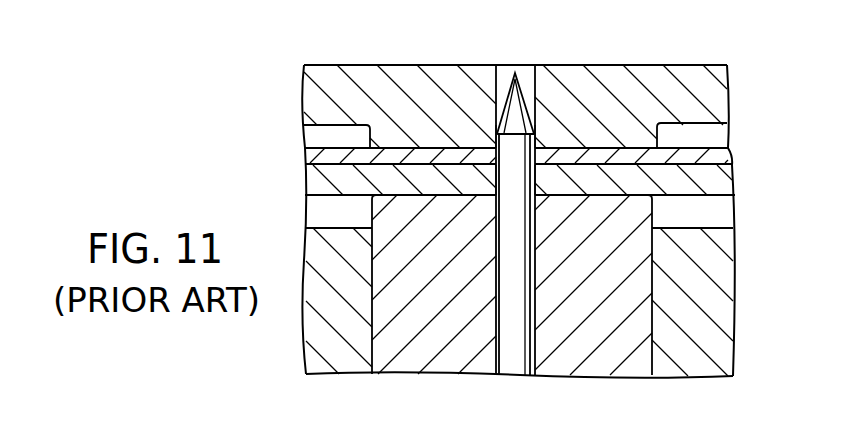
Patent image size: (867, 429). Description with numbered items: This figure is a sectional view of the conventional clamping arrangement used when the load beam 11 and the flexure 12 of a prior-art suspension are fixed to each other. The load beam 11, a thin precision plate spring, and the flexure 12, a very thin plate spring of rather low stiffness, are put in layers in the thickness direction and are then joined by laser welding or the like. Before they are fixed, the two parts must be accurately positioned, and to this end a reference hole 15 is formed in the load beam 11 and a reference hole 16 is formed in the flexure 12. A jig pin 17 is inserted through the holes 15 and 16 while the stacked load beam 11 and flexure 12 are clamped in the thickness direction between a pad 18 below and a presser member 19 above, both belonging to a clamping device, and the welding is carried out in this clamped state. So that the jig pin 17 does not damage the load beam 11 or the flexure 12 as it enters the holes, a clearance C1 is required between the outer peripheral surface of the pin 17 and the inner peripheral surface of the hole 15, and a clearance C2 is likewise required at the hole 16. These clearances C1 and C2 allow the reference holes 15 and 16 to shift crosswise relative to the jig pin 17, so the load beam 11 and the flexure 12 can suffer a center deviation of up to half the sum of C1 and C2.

The load beam 11 is at (727, 180).
The flexure 12 is at (723, 155).
The reference hole 15 is at (452, 148).
The reference hole 16 is at (490, 184).
The jig pin 17 is at (515, 73).
The pad 18 is at (630, 266).
The presser member 19 is at (708, 90).
The clearance C1 is at (542, 155).
The clearance C2 is at (540, 183).